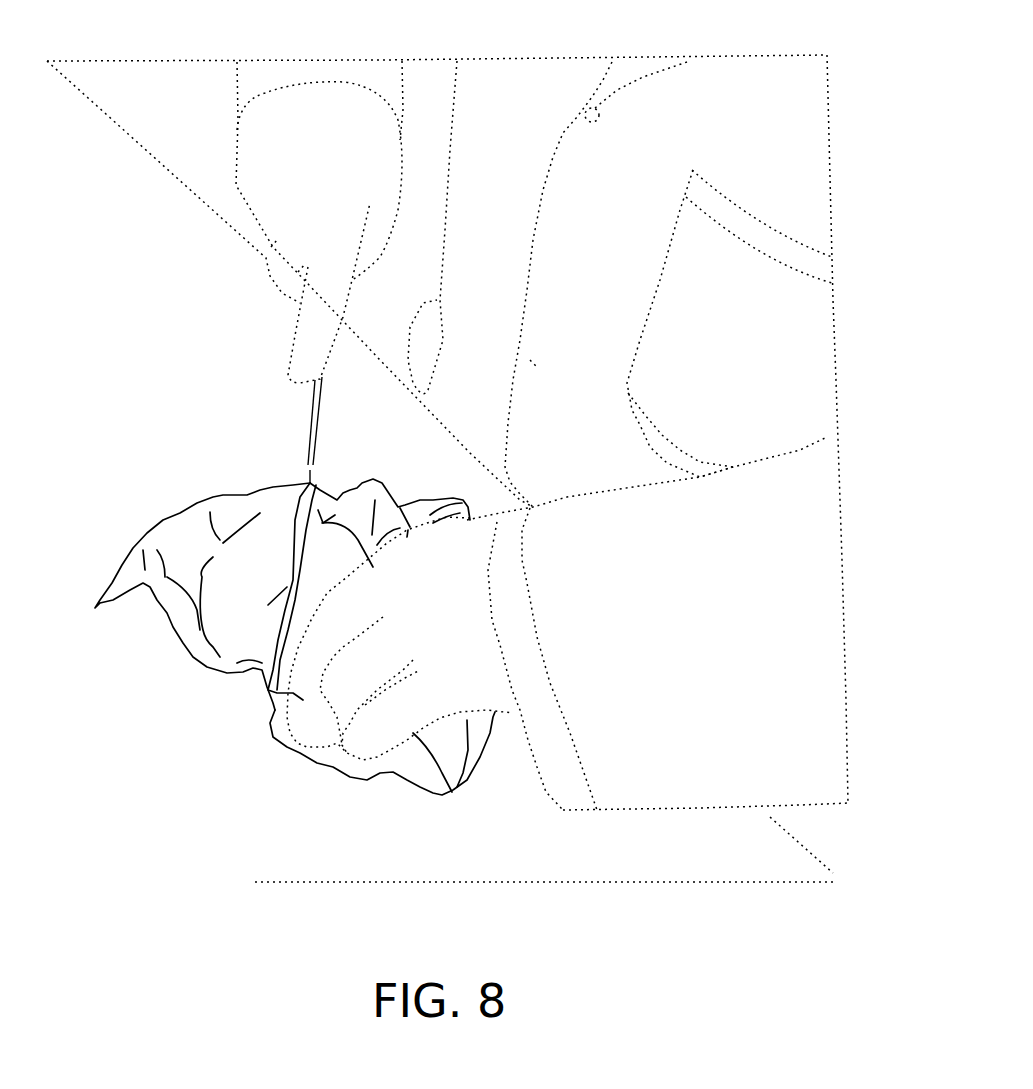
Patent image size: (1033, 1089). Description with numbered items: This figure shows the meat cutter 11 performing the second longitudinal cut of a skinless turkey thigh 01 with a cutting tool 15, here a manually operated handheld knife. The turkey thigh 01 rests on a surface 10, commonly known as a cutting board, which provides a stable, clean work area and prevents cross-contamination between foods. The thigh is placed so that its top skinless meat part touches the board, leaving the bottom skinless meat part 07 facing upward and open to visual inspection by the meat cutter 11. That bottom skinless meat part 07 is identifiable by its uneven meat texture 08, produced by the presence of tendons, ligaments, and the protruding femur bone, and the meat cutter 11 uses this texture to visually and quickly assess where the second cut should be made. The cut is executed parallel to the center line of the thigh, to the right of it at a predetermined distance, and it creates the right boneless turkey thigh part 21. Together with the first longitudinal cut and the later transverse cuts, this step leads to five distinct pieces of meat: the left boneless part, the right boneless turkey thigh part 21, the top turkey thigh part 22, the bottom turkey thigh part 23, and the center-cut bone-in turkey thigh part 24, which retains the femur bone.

The turkey thigh 01 is at (205, 586).
The right boneless turkey thigh part 21 is at (183, 528).
The bottom skinless meat part 07 is at (164, 640).
The uneven meat texture 08 is at (198, 645).
The meat cutter 11 is at (310, 735).
The cutting tool 15 is at (310, 467).
The top turkey thigh part 22 is at (394, 783).
The bottom turkey thigh part 23 is at (394, 783).
The center-cut bone-in turkey thigh part 24 is at (442, 790).
The surface 10 is at (680, 883).